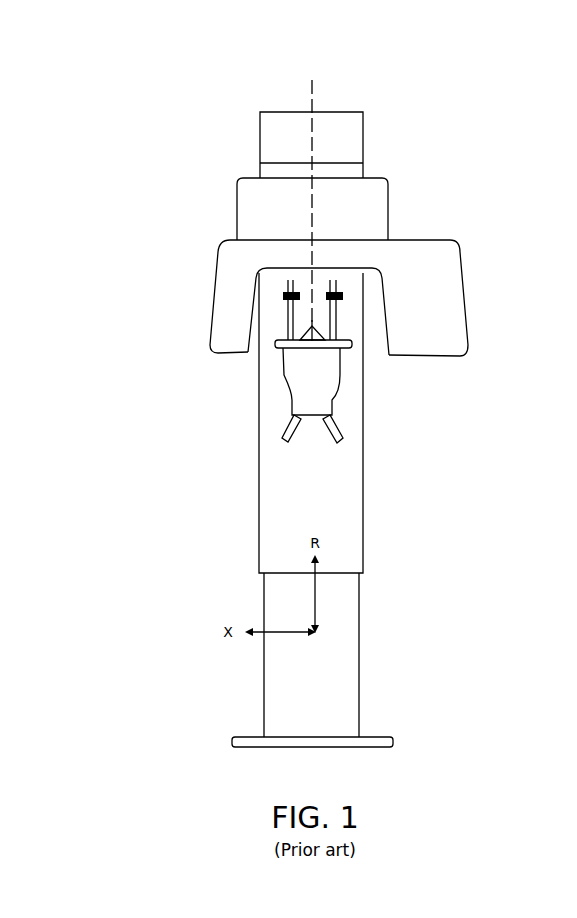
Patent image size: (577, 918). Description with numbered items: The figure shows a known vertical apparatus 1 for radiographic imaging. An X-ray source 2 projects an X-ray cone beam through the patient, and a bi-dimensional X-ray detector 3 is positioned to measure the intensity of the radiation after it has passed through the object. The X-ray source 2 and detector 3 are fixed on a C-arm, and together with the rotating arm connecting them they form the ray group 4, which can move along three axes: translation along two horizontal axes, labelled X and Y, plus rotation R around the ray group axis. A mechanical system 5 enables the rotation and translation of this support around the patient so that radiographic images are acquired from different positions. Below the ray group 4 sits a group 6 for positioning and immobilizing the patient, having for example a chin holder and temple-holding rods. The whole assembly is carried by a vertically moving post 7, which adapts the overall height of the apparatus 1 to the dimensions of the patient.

The vertical apparatus 1 is at (236, 149).
The X-ray source 2 is at (425, 297).
The bi-dimensional X-ray detector 3 is at (228, 307).
The ray group 4 is at (343, 255).
The mechanical system 5 is at (362, 205).
The group for positioning and immobilizing a patient 6 is at (333, 323).
The vertically moving post 7 is at (327, 504).